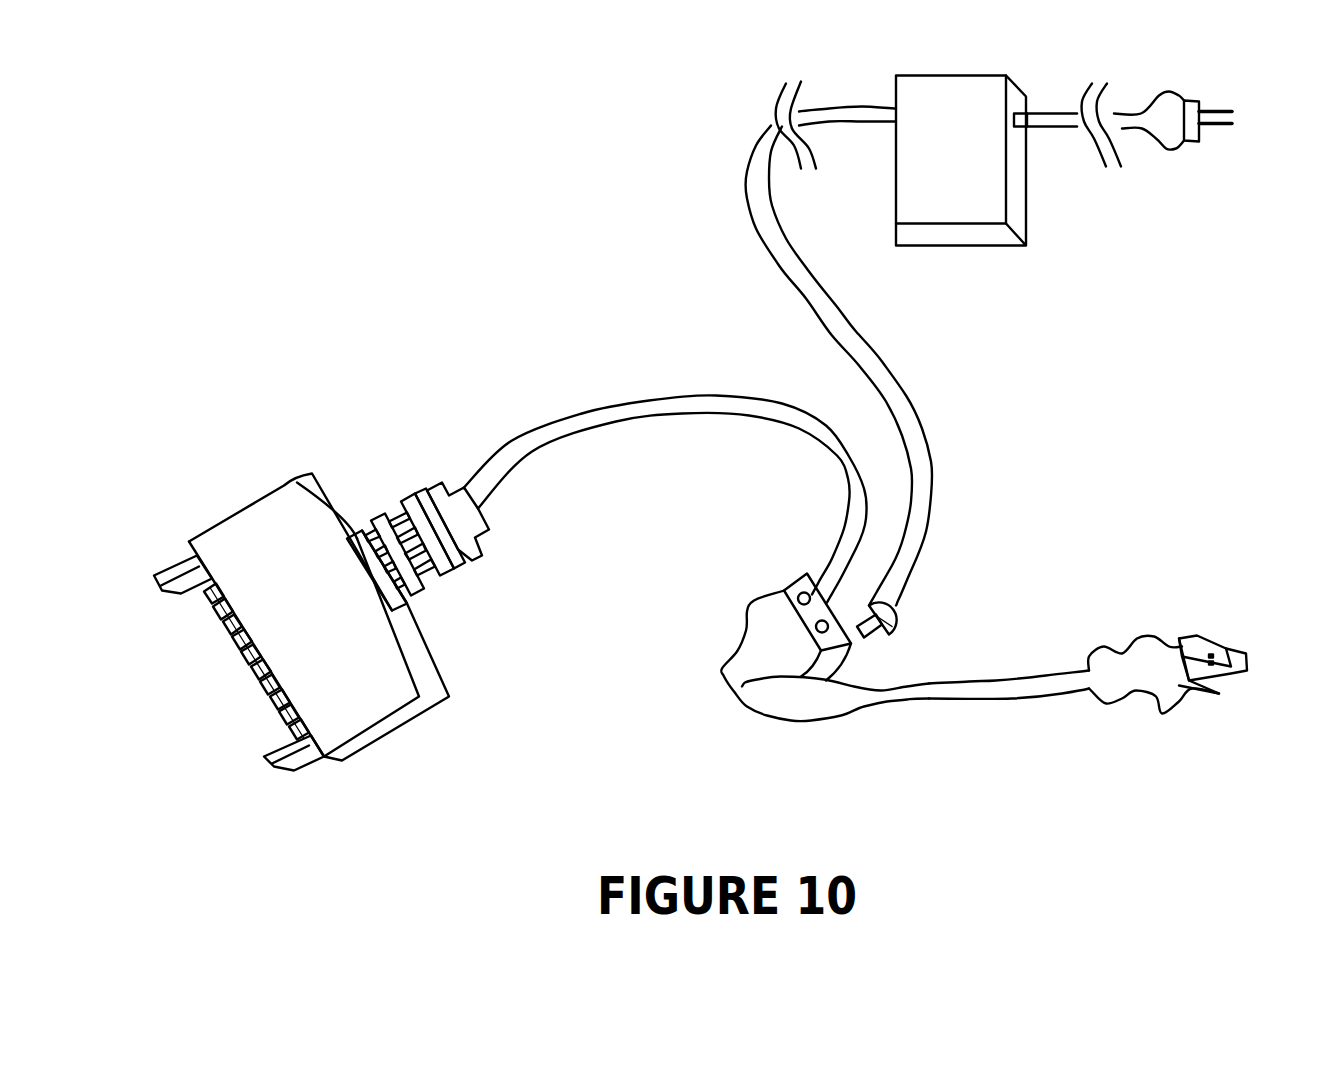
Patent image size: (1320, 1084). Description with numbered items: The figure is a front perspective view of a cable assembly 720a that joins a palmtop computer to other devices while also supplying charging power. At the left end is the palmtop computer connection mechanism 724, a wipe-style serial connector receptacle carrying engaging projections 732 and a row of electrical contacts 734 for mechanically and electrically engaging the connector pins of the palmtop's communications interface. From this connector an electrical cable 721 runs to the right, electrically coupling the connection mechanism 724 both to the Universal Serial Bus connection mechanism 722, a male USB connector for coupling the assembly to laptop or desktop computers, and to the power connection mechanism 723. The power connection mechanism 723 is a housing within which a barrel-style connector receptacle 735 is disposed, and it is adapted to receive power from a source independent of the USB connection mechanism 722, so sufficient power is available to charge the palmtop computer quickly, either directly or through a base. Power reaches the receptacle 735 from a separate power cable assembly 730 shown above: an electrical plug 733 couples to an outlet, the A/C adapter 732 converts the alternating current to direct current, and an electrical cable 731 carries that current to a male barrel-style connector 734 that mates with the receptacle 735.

The cable assembly 720a is at (215, 82).
The electrical cable 721 is at (654, 437).
The Universal Serial Bus connection mechanism 722 is at (1162, 681).
The power connection mechanism 723 is at (793, 657).
The palmtop computer connection mechanism 724 is at (322, 641).
The power cable assembly 730 is at (918, 399).
The electrical cable 731 is at (840, 322).
The A/C adapter 732 is at (305, 758).
The electrical plug 733 is at (1170, 140).
The male barrel-style connector 734 is at (228, 682).
The barrel-style connector receptacle 735 is at (836, 611).